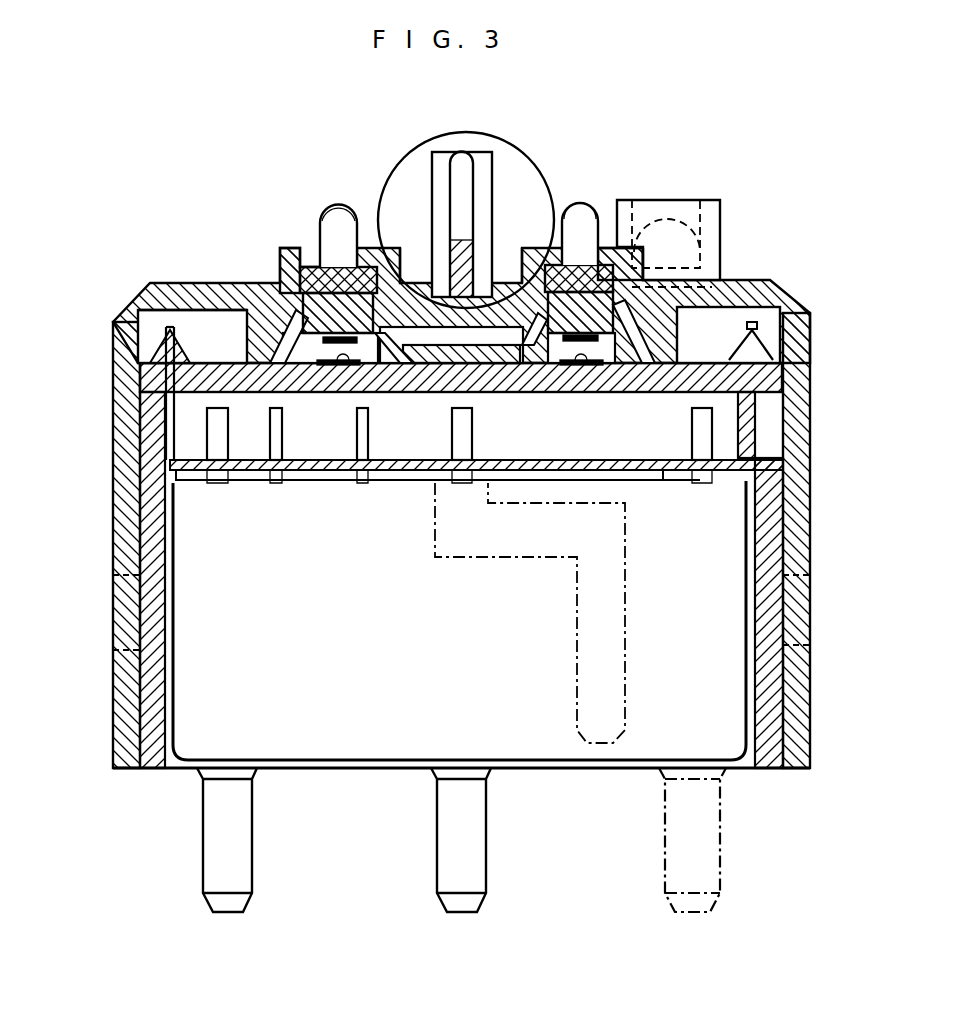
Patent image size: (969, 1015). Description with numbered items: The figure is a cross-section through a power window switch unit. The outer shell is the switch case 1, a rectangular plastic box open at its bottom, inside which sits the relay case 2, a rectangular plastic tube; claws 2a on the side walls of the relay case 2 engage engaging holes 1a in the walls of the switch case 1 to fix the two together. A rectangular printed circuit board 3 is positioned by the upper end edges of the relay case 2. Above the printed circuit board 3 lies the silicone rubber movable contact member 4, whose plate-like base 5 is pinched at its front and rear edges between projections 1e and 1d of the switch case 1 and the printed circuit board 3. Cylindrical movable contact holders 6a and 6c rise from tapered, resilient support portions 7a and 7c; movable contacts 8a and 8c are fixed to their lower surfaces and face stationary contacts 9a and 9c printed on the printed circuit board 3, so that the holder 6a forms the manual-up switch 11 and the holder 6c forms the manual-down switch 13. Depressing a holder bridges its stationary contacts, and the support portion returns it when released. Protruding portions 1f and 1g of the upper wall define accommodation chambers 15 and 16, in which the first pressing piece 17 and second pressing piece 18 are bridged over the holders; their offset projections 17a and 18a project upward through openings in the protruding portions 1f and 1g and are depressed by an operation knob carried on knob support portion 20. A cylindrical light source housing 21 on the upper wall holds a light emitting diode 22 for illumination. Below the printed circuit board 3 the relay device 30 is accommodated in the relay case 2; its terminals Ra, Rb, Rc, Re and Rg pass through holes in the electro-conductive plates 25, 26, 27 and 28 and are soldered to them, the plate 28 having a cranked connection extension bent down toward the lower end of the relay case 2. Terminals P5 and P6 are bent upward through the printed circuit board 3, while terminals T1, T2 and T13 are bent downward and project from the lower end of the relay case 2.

The switch case 1 is at (796, 478).
The engaging hole 1a is at (120, 636).
The projection 1d is at (712, 288).
The projection 1e is at (245, 310).
The protruding portion 1f is at (536, 247).
The protruding portion 1g is at (391, 248).
The relay case 2 is at (776, 518).
The claw 2a is at (120, 580).
The printed circuit board 3 is at (784, 402).
The movable contact member 4 is at (250, 312).
The base 5 is at (476, 363).
The movable contact holder 6a is at (545, 268).
The movable contact holder 6c is at (296, 325).
The support portion 7a is at (650, 337).
The support portion 7c is at (270, 334).
The movable contact 8a is at (548, 350).
The movable contact 8c is at (300, 345).
The stationary contact 9a is at (582, 347).
The stationary contact 9c is at (335, 345).
The manual-up switch 11 is at (620, 347).
The manual-down switch 13 is at (372, 355).
The accommodation chamber 15 is at (608, 247).
The accommodation chamber 16 is at (307, 273).
The first pressing piece 17 is at (560, 262).
The projection 17a is at (586, 203).
The second pressing piece 18 is at (370, 243).
The projection 18a is at (340, 207).
The knob support portion 20 is at (493, 132).
The light source housing 21 is at (722, 212).
The light emitting diode 22 is at (694, 200).
The electro-conductive plate 25 is at (543, 462).
The electro-conductive plate 26 is at (633, 460).
The electro-conductive plate 27 is at (784, 452).
The electro-conductive plate 28 is at (437, 490).
The relay device 30 is at (360, 771).
The terminal P5 is at (755, 322).
The terminal P6 is at (163, 333).
The terminal Ra is at (232, 452).
The terminal Rb is at (292, 450).
The terminal Rc is at (350, 450).
The terminal Re is at (462, 470).
The terminal Rg is at (690, 450).
The terminal T1 is at (203, 806).
The terminal T2 is at (488, 840).
The terminal T13 is at (722, 845).